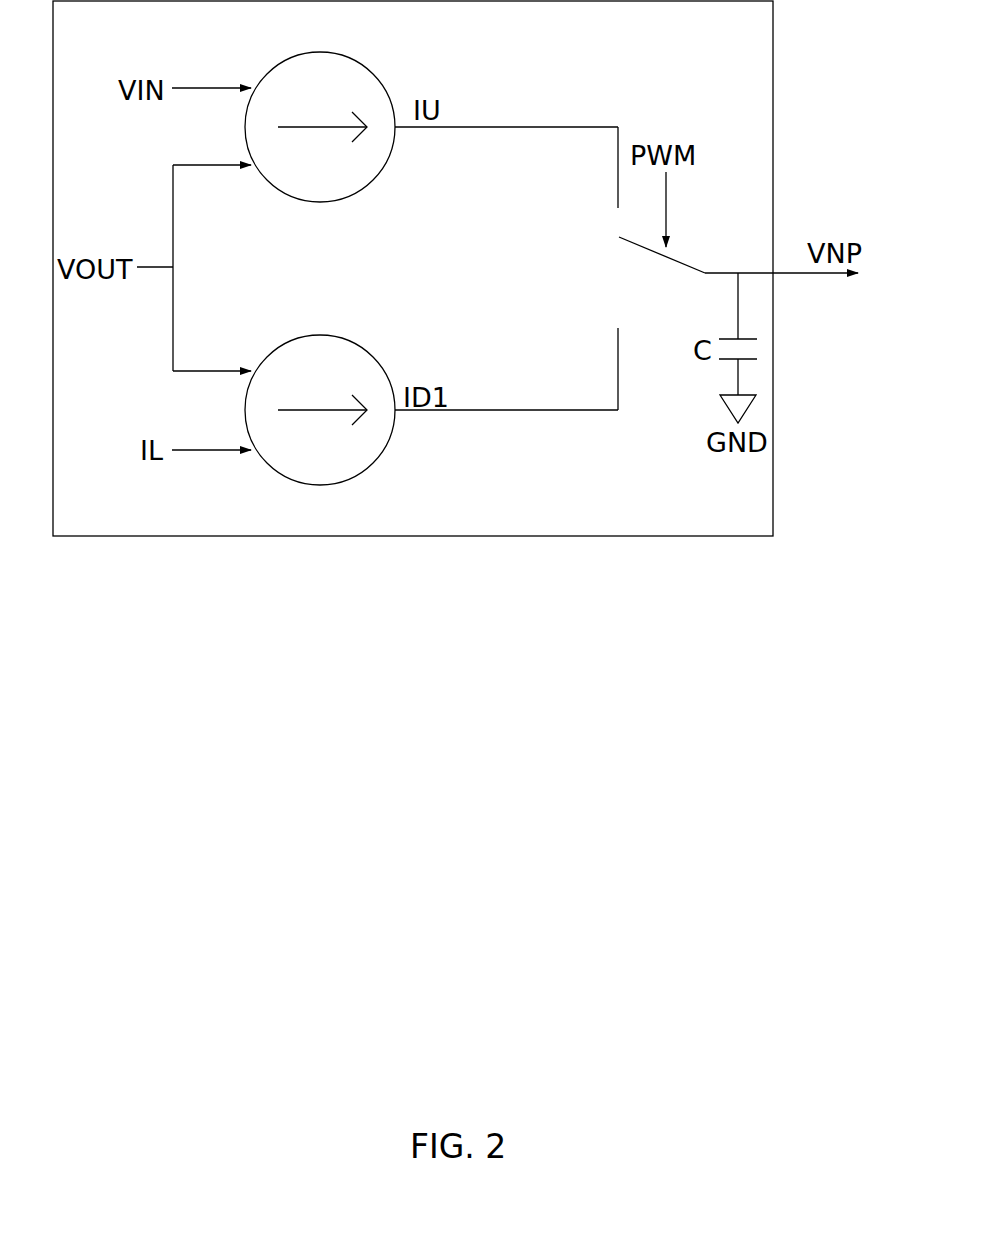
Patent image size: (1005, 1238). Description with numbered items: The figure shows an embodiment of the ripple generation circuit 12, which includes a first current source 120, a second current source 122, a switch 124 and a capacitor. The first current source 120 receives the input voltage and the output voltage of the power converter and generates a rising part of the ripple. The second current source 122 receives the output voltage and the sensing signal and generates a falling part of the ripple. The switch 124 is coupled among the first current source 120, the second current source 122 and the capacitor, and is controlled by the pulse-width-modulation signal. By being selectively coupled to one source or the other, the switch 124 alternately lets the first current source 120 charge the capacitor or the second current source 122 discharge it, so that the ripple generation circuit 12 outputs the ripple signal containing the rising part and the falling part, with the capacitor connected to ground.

The ripple generation circuit 12 is at (746, 40).
The first current source 120 is at (320, 112).
The second current source 122 is at (320, 396).
The switch 124 is at (654, 268).